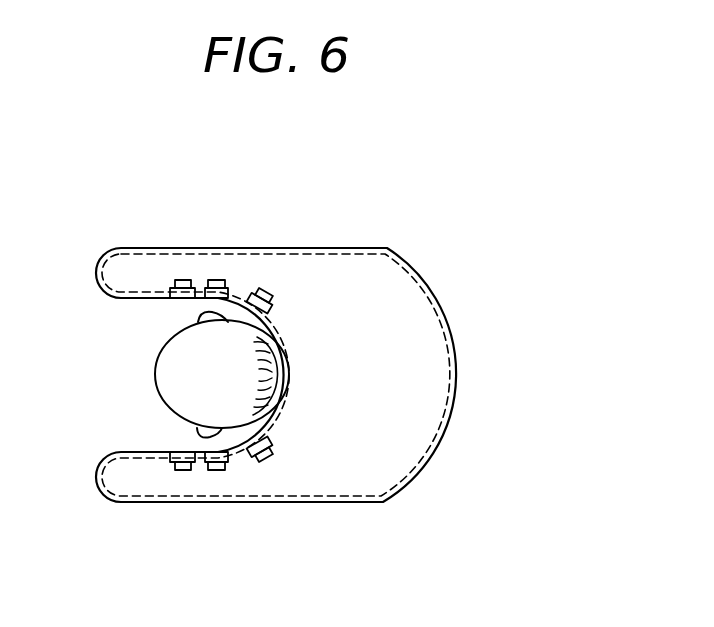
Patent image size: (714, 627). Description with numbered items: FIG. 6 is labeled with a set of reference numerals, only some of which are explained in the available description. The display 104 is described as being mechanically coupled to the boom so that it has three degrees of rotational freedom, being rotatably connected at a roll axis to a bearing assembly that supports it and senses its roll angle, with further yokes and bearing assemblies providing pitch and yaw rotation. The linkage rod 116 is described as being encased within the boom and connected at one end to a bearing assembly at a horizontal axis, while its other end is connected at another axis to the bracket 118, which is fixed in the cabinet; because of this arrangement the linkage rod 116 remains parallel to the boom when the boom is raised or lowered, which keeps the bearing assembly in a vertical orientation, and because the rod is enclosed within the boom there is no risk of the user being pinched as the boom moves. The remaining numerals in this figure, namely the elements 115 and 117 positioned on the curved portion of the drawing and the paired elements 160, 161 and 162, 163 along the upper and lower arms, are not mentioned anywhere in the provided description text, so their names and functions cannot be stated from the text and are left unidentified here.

The display 104 is at (448, 319).
The side fastener 115 is at (268, 289).
The linkage rod 116 is at (177, 296).
The side fastener 117 is at (268, 459).
The bracket 118 is at (180, 452).
The snap fastener base 160 is at (210, 240).
The snap fastener cap 161 is at (213, 280).
The snap fastener base 162 is at (220, 518).
The snap fastener cap 163 is at (213, 470).